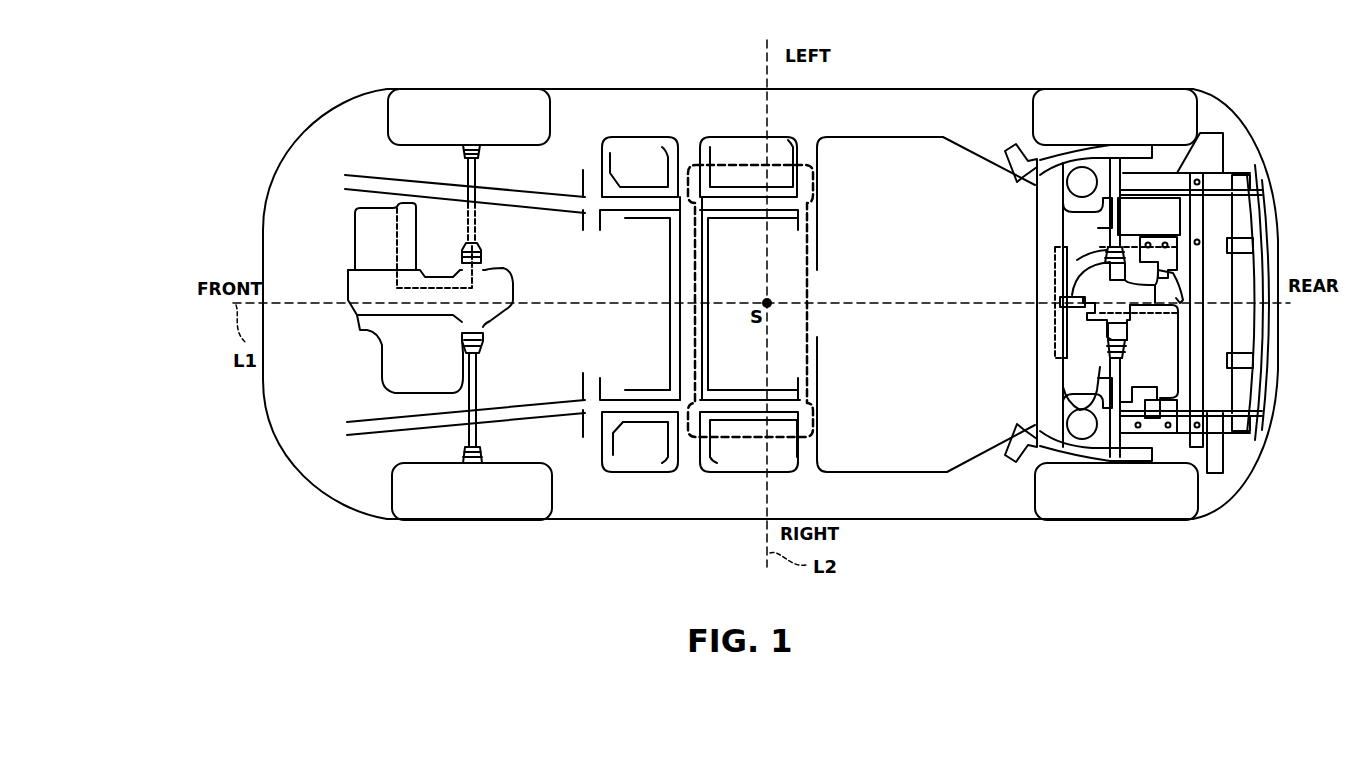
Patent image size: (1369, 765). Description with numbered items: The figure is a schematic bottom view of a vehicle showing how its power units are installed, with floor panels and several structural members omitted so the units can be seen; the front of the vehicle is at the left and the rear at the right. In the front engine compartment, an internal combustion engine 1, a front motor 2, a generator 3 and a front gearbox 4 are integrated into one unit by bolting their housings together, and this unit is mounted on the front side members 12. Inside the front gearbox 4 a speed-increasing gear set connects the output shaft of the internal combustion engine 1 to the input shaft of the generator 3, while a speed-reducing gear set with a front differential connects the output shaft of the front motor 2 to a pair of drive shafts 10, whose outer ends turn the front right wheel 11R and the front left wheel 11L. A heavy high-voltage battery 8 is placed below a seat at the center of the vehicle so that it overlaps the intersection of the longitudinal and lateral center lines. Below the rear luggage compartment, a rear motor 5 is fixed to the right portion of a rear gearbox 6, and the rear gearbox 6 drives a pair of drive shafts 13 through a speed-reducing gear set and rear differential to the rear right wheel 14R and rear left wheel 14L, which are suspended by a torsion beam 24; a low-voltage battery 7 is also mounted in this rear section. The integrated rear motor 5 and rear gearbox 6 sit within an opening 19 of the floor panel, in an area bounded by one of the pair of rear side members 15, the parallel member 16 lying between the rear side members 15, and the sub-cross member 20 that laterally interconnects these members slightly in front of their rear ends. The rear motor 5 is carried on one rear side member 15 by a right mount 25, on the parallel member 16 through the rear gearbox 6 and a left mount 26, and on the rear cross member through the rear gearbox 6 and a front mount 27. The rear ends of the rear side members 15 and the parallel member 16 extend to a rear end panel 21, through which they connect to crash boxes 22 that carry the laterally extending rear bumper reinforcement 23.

The internal combustion engine 1 is at (397, 360).
The front motor 2 is at (450, 227).
The generator 3 is at (377, 238).
The front gearbox 4 is at (500, 287).
The rear motor 5 is at (1162, 357).
The rear gearbox 6 is at (1070, 297).
The low-voltage battery 7 is at (1168, 217).
The high-voltage battery 8 is at (733, 432).
The drive shafts 10 is at (472, 177).
The front left wheel 11L is at (475, 97).
The front right wheel 11R is at (472, 517).
The front side member 12 is at (365, 183).
The drive shafts 13 is at (1115, 217).
The rear left wheel 14L is at (1130, 102).
The rear right wheel 14R is at (1113, 507).
The rear side members 15 is at (1173, 183).
The parallel member 16 is at (1210, 243).
The opening 19 is at (1085, 333).
The sub-cross member 20 is at (1200, 385).
The rear end panel 21 is at (1257, 322).
The crash boxes 22 is at (1242, 183).
The rear bumper reinforcement 23 is at (1258, 403).
The torsion beam 24 is at (1043, 387).
The right mount 25 is at (1155, 413).
The left mount 26 is at (1180, 287).
The front mount 27 is at (1063, 300).